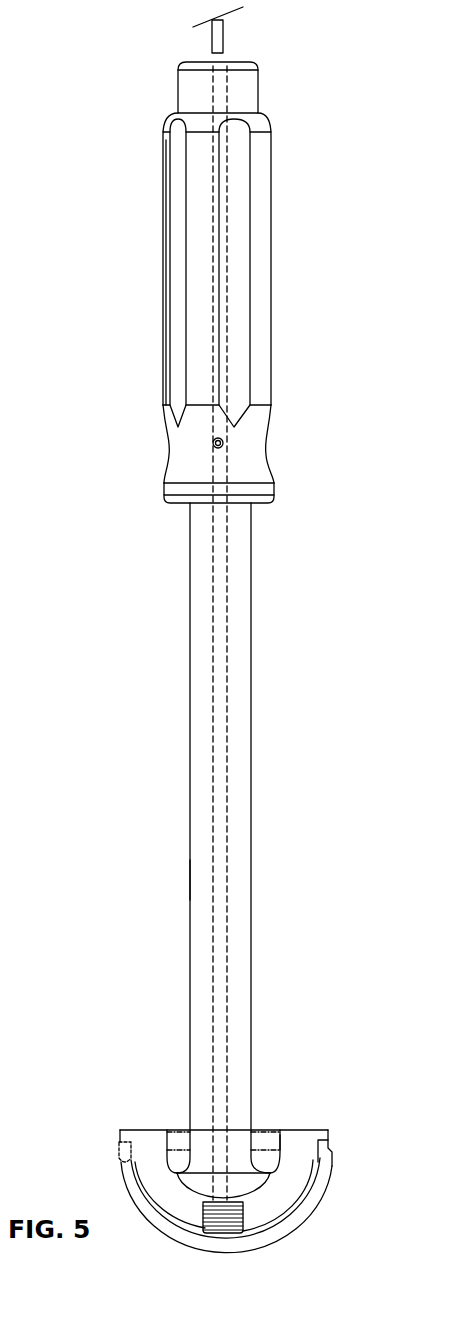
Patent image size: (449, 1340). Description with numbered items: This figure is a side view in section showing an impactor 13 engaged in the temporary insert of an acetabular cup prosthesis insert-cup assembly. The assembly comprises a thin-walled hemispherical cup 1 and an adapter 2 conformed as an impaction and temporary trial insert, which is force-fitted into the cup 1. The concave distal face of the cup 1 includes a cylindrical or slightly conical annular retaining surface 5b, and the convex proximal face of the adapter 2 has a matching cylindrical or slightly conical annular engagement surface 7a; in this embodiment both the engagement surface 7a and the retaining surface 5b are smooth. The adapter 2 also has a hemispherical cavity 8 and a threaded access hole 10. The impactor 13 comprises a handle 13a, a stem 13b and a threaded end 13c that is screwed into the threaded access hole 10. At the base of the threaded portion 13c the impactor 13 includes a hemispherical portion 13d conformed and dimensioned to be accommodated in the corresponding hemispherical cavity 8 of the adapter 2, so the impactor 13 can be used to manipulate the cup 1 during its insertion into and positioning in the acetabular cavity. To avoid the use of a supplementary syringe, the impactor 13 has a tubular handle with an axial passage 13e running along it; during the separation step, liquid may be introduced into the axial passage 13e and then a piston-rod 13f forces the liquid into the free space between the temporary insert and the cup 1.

The cup 1 is at (308, 1203).
The adapter 2 is at (296, 1148).
The annular retaining surface 5b is at (121, 1166).
The annular engagement surface 7a is at (133, 1155).
The hemispherical cavity 8 is at (265, 1158).
The threaded access hole 10 is at (243, 1215).
The impactor 13 is at (239, 665).
The handle 13a is at (255, 273).
The stem 13b is at (200, 887).
The threaded end 13c is at (218, 1221).
The hemispherical portion 13d is at (250, 1180).
The axial passage 13e is at (227, 762).
The piston-rod 13f is at (220, 38).